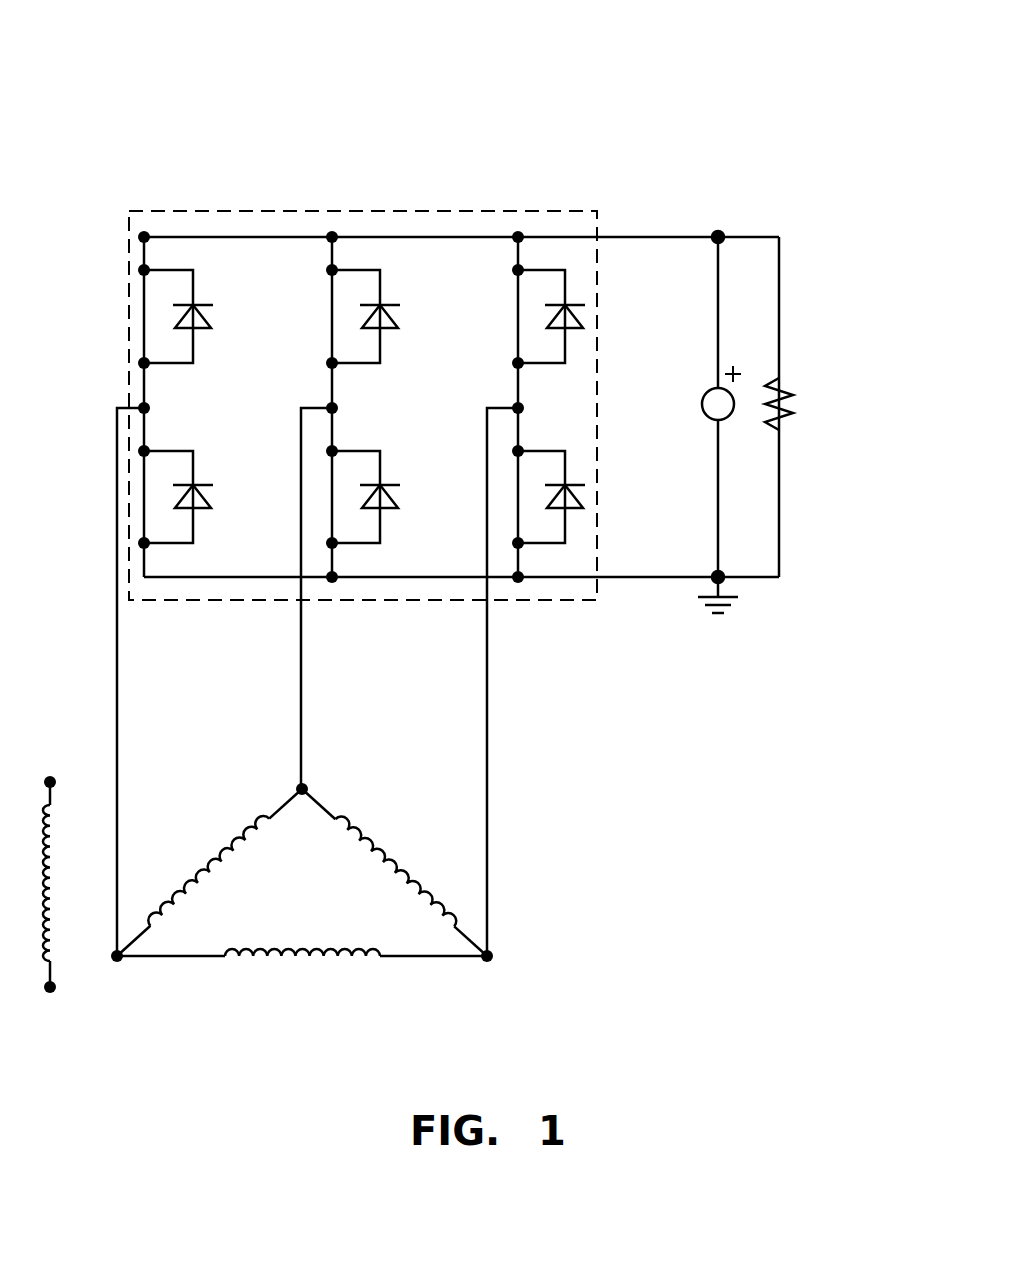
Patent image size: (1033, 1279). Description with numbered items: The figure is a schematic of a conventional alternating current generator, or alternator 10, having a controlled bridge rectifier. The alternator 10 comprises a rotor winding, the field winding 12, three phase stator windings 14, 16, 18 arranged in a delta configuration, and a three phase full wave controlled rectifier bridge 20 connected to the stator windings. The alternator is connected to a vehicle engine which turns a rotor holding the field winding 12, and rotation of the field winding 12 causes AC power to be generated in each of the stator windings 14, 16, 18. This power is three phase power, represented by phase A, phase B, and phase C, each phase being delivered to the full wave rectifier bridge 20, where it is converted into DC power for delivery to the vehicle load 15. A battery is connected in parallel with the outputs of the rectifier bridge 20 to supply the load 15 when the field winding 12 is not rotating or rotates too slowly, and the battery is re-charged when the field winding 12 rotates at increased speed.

The alternator 10 is at (608, 80).
The field winding 12 is at (53, 802).
The stator winding 14 is at (205, 873).
The vehicle load 15 is at (785, 380).
The stator winding 16 is at (400, 873).
The stator winding 18 is at (313, 960).
The full wave controlled rectifier bridge 20 is at (432, 209).